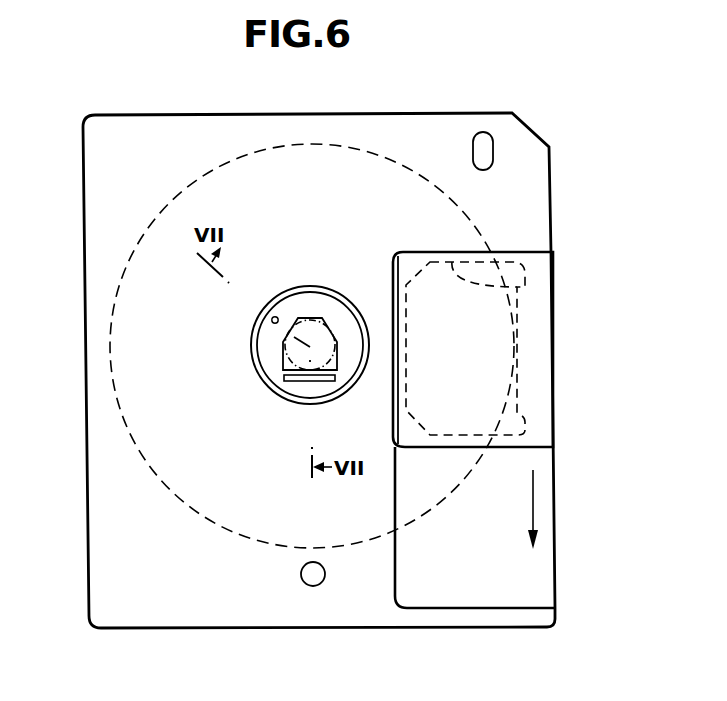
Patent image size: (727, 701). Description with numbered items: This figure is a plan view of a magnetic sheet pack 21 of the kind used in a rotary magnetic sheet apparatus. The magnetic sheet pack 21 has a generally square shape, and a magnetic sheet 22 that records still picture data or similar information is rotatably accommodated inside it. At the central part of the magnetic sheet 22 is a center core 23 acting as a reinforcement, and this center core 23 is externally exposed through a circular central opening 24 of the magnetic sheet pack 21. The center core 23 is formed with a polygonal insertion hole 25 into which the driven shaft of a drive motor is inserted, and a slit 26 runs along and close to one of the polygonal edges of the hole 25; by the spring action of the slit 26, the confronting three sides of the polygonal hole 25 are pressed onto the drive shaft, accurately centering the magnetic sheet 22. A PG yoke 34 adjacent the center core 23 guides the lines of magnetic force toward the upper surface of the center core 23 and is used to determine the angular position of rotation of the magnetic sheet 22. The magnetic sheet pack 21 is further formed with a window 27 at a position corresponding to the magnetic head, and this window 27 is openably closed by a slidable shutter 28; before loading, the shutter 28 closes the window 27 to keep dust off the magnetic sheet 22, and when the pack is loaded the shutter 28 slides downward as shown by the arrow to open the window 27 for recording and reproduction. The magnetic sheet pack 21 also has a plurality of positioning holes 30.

The magnetic sheet pack 21 is at (100, 110).
The magnetic sheet 22 is at (418, 172).
The center core 23 is at (267, 357).
The circular central opening 24 is at (343, 303).
The polygonal insertion hole 25 is at (315, 330).
The slit 26 is at (297, 382).
The window 27 is at (540, 286).
The shutter 28 is at (557, 404).
The positioning holes 30 is at (483, 154).
The PG yoke 34 is at (271, 320).